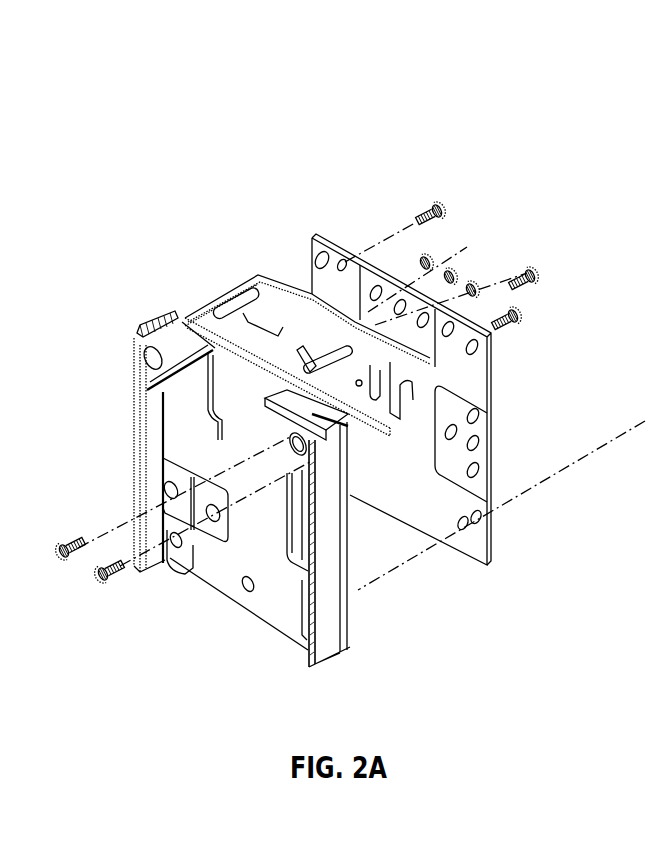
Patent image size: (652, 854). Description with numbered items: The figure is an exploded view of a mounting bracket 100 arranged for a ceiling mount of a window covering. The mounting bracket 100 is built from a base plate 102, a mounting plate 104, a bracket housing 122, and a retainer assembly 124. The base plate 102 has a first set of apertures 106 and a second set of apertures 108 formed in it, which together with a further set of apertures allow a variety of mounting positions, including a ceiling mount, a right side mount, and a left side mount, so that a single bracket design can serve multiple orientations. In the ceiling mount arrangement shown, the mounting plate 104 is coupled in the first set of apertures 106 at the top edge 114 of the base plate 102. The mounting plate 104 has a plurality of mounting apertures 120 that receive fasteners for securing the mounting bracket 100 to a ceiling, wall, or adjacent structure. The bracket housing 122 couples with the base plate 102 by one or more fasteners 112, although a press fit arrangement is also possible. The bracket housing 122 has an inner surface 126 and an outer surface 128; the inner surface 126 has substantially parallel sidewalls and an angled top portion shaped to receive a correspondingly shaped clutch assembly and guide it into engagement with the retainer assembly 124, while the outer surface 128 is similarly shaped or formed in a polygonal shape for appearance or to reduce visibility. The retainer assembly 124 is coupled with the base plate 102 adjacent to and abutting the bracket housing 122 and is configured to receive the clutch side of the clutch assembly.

The mounting bracket 100 is at (263, 112).
The base plate 102 is at (328, 230).
The mounting plate 104 is at (228, 289).
The first set of apertures 106 is at (376, 286).
The second set of apertures 108 is at (484, 412).
The fasteners 112 is at (453, 203).
The top edge 114 is at (452, 332).
The mounting apertures 120 is at (213, 321).
The bracket housing 122 is at (233, 600).
The retainer assembly 124 is at (160, 453).
The inner surface 126 is at (148, 523).
The outer surface 128 is at (331, 643).